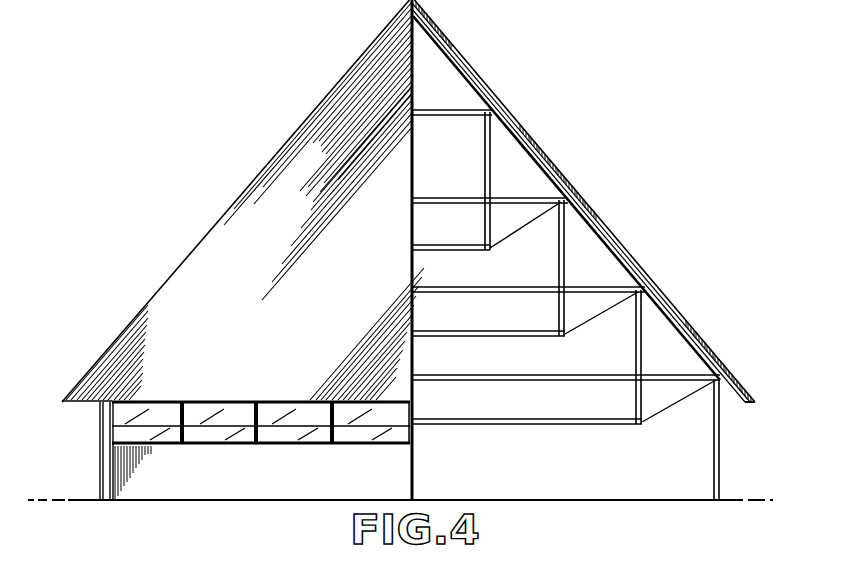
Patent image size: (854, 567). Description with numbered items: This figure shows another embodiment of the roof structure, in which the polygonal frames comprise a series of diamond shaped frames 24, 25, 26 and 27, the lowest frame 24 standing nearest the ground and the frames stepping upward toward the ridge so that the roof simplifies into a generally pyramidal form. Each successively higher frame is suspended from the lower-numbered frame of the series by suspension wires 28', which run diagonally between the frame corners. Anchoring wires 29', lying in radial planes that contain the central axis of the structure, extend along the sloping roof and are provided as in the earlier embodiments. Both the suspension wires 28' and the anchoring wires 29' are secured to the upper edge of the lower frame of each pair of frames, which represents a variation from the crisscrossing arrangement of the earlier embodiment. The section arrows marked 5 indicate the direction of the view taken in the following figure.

The section line indicator for FIG. 5 is at (55, 0).
The diamond shaped frame 24 is at (723, 447).
The diamond shaped frame 25 is at (646, 355).
The diamond shaped frame 26 is at (569, 255).
The diamond shaped frame 27 is at (494, 167).
The suspension wire 28' is at (603, 315).
The anchoring wire 29' is at (583, 201).